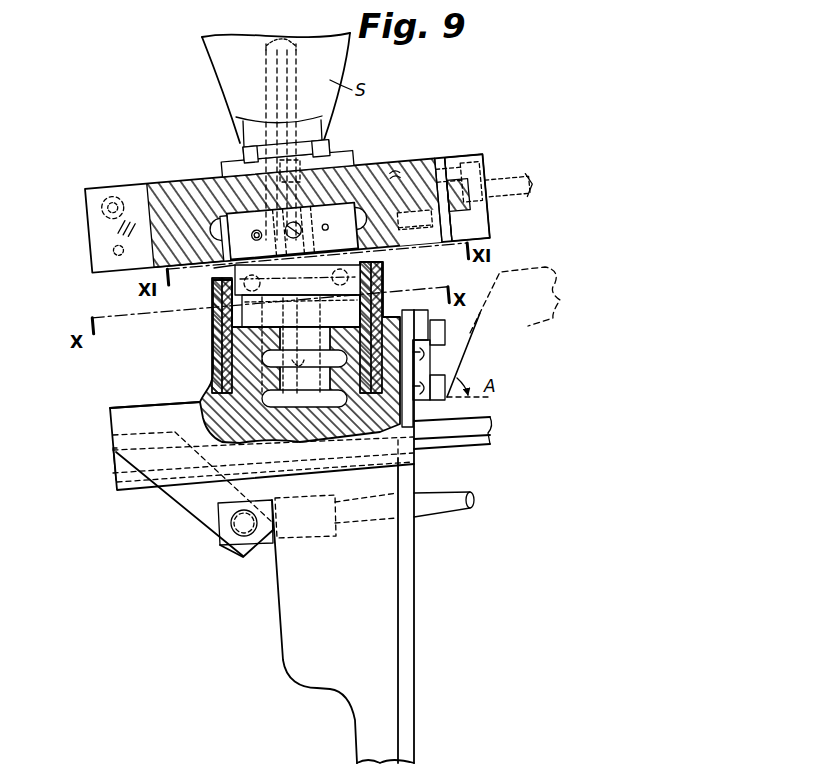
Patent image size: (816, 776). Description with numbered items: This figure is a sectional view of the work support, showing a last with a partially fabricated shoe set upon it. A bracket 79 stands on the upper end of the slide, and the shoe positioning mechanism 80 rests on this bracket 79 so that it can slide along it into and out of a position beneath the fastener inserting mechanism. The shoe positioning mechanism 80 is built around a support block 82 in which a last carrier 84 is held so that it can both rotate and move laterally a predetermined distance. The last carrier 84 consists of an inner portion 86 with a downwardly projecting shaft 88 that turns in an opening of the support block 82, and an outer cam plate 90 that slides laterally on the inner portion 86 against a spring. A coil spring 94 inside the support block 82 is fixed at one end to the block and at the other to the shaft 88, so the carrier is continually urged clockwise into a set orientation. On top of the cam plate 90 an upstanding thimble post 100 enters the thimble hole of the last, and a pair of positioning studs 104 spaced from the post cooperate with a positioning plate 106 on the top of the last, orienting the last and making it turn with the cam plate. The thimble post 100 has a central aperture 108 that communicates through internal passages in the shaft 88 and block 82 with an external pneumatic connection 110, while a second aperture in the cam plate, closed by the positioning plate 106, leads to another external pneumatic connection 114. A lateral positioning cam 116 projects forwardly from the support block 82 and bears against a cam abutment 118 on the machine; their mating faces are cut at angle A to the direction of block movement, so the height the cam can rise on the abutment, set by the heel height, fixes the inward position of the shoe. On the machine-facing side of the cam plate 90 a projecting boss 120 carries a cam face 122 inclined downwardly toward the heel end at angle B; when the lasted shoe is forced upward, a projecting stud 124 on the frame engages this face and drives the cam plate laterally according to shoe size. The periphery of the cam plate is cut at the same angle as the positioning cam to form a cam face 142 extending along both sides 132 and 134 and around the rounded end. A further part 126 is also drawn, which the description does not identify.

The bracket 79 is at (415, 572).
The shoe positioning mechanism 80 is at (582, 216).
The support block 82 is at (213, 329).
The last carrier 84 is at (200, 278).
The inner portion 86 is at (357, 215).
The shaft 88 is at (383, 277).
The cam plate 90 is at (175, 186).
The coil spring 94 is at (352, 319).
The thimble post 100 is at (264, 64).
The positioning studs 104 is at (245, 152).
The positioning plate 106 is at (258, 148).
The central aperture 108 is at (277, 44).
The external pneumatic connection 110 is at (418, 399).
The external pneumatic connection 114 is at (447, 380).
The lateral positioning cam 116 is at (445, 355).
The cam abutment 118 is at (562, 288).
The projecting boss 120 is at (468, 156).
The cam face 122 is at (484, 190).
The projecting stud 124 is at (532, 186).
The left end block 126 is at (86, 190).
The side of the cam plate 132 is at (438, 165).
The side of the cam plate 134 is at (200, 262).
The cam face 142 is at (400, 172).